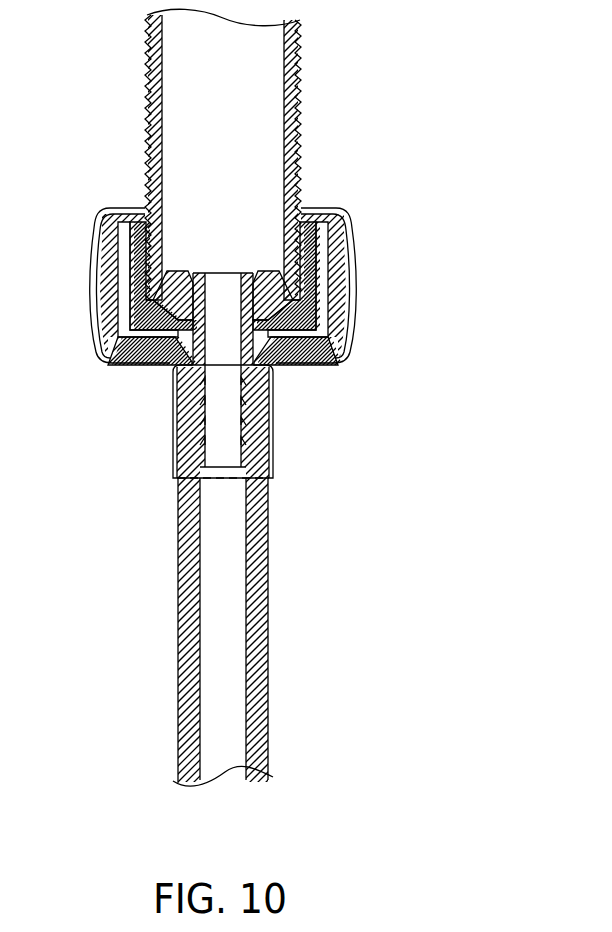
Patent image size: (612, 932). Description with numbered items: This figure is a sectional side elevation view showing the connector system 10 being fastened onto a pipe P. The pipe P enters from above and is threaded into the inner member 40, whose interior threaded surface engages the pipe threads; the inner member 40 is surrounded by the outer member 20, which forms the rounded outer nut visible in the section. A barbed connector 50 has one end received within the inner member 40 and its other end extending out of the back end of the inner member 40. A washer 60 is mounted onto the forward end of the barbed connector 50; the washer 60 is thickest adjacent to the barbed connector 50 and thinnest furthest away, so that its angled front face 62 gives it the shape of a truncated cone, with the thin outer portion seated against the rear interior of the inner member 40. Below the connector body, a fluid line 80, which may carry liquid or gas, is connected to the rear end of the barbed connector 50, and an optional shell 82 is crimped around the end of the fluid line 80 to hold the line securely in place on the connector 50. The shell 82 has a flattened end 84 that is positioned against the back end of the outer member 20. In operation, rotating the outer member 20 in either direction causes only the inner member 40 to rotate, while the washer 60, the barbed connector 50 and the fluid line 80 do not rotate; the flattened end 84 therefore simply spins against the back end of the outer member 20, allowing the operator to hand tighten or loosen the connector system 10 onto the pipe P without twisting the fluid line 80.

The connector system 10 is at (306, 400).
The pipe P is at (148, 105).
The outer member 20 is at (93, 275).
The inner member 40 is at (135, 233).
The barbed connector 50 is at (266, 442).
The washer 60 is at (259, 270).
The front face 62 is at (188, 270).
The fluid line 80 is at (178, 525).
The shell 82 is at (175, 410).
The flattened end 84 is at (300, 357).